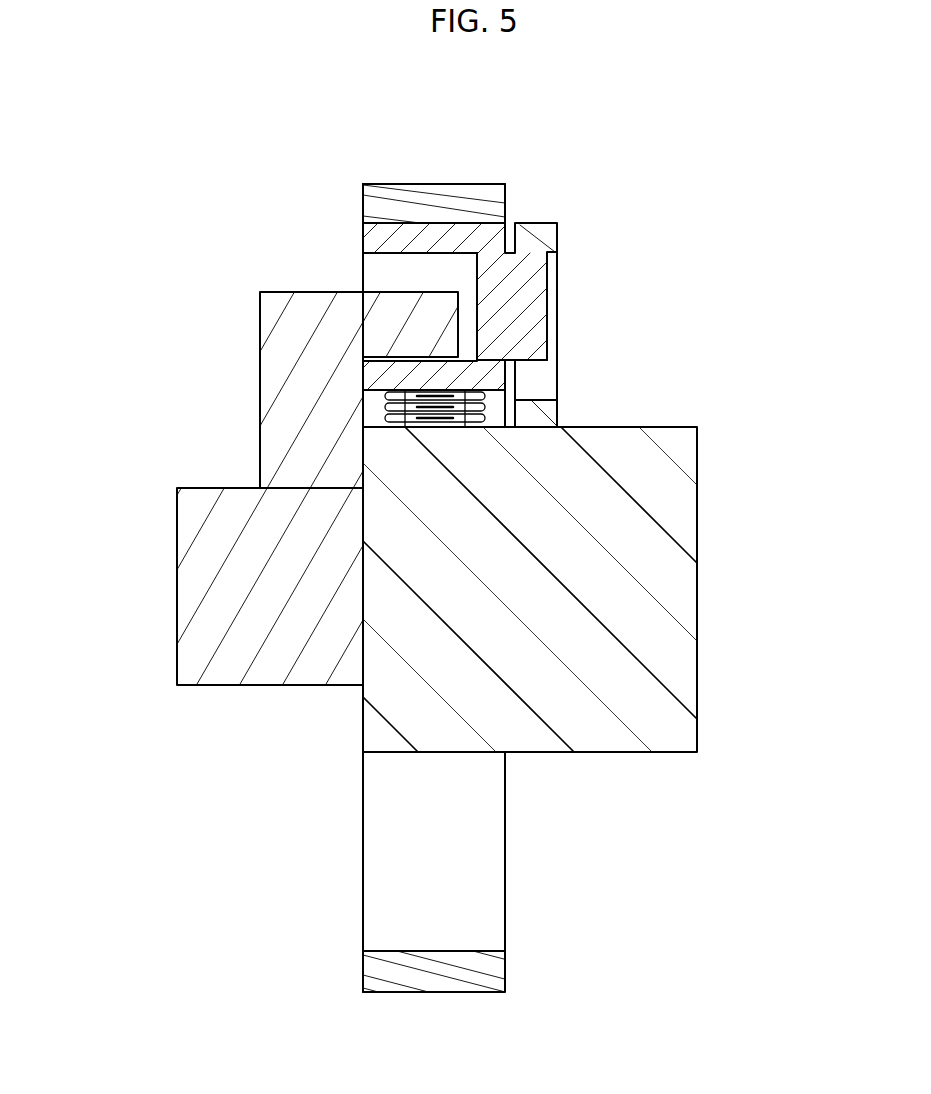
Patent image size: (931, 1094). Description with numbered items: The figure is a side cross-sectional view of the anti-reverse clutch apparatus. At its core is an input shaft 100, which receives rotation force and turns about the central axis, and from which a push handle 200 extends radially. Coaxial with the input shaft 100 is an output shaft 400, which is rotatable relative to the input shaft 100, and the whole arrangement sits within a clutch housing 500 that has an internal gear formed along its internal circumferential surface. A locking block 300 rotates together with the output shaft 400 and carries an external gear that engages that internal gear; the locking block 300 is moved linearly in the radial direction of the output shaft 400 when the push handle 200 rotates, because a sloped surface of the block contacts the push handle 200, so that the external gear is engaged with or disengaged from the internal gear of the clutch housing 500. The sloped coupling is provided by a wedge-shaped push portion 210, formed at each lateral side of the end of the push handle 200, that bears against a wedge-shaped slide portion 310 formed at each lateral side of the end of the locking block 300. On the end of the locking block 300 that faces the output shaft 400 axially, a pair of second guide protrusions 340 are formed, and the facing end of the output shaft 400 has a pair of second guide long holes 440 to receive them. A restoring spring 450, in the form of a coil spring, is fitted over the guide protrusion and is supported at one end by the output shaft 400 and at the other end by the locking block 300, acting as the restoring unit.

The input shaft 100 is at (222, 590).
The push handle 200 is at (302, 380).
The push portion 210 is at (411, 325).
The locking block 300 is at (493, 230).
The slide portion 310 is at (418, 267).
The second guide protrusion 340 is at (530, 302).
The output shaft 400 is at (647, 612).
The second guide long hole 440 is at (535, 400).
The restoring spring 450 is at (385, 400).
The clutch housing 500 is at (462, 858).